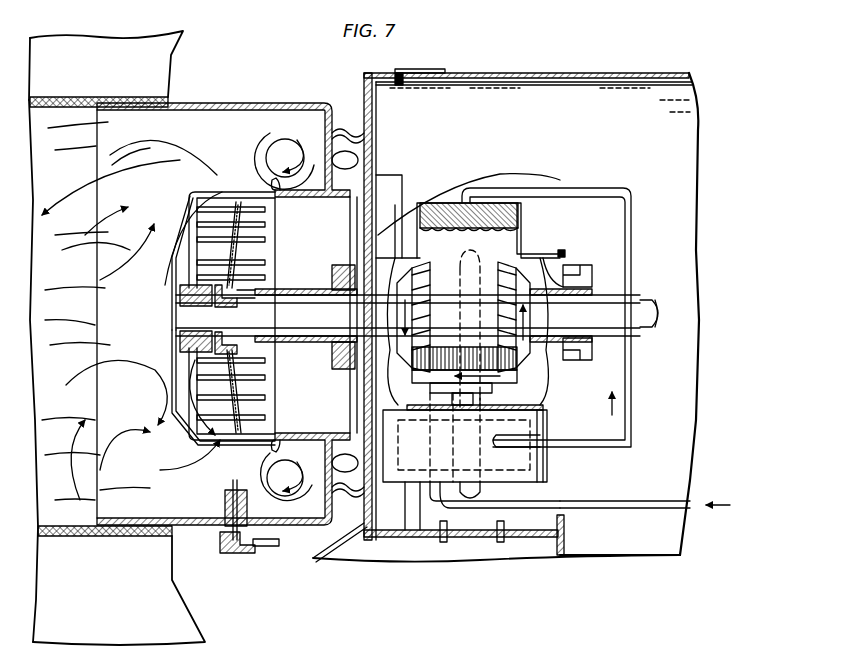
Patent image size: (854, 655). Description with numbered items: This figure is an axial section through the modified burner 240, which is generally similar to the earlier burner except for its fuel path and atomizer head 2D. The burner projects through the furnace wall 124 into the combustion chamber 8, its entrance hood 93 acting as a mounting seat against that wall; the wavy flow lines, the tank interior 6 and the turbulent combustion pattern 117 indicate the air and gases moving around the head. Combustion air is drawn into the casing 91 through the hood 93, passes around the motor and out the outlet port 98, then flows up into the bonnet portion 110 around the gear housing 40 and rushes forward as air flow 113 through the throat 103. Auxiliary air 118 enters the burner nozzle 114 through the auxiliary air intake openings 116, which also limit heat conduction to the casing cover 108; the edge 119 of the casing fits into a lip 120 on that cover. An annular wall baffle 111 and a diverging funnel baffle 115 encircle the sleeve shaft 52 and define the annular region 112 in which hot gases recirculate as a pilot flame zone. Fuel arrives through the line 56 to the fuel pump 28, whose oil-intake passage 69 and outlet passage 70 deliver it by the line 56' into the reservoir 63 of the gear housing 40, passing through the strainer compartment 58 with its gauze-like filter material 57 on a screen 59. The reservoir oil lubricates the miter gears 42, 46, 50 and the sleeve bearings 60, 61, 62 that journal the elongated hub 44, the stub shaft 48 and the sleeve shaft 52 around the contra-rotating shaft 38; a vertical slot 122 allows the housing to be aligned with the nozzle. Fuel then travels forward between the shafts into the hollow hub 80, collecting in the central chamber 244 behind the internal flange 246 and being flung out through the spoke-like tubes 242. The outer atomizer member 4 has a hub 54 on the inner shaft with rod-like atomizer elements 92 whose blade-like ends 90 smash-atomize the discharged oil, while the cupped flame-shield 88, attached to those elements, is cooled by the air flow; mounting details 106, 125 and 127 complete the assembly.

The atomizer head 2D is at (166, 452).
The outer atomizer member 4 is at (190, 188).
The tank interior 6 is at (64, 300).
The combustion chamber 8 is at (48, 164).
The fuel pump 28 is at (552, 452).
The contra-rotating shaft 38 is at (645, 301).
The gear housing 40 is at (566, 252).
The miter gear 42 is at (500, 266).
The elongated hub 44 is at (638, 338).
The miter gear 46 is at (464, 356).
The stub shaft 48 is at (478, 398).
The miter gear 50 is at (430, 265).
The sleeve shaft 52 is at (325, 285).
The hub 54 is at (183, 296).
The fuel line 56 is at (645, 489).
The line 56' is at (564, 317).
The gauze-like filter material 57 is at (518, 212).
The strainer compartment 58 is at (523, 237).
The screen 59 is at (462, 228).
The sleeve bearing 60 is at (580, 288).
The sleeve bearing 61 is at (450, 406).
The sleeve bearing 62 is at (341, 307).
The reservoir 63 is at (452, 294).
The oil-intake passage 69 is at (430, 455).
The outlet passage 70 is at (520, 442).
The hollow hub 80 is at (232, 290).
The cupped flame-shield 88 is at (176, 260).
The blade-like ends 90 is at (255, 425).
The casing 91 is at (699, 117).
The atomizer elements 92 is at (195, 352).
The entrance hood 93 is at (318, 560).
The outlet port 98 is at (563, 554).
The throat 103 is at (366, 135).
The bottom plate 106 is at (563, 532).
The casing cover 108 is at (366, 115).
The bonnet portion 110 is at (475, 78).
The annular wall baffle 111 is at (333, 497).
The annular region 112 is at (292, 138).
The air flow 113 is at (378, 234).
The burner nozzle 114 is at (200, 108).
The diverging funnel baffle 115 is at (345, 178).
The auxiliary air intake openings 116 is at (358, 160).
The turbulent combustion pattern 117 is at (172, 150).
The auxiliary air 118 is at (346, 118).
The edge 119 is at (400, 74).
The lip 120 is at (420, 72).
The vertical slot 122 is at (478, 498).
The furnace wall 124 is at (148, 608).
The mounting post 125 is at (226, 494).
The mounting bracket 127 is at (262, 550).
The burner 240 is at (650, 575).
The spoke-like tubes 242 is at (245, 226).
The central chamber 244 is at (240, 290).
The internal flange 246 is at (408, 315).